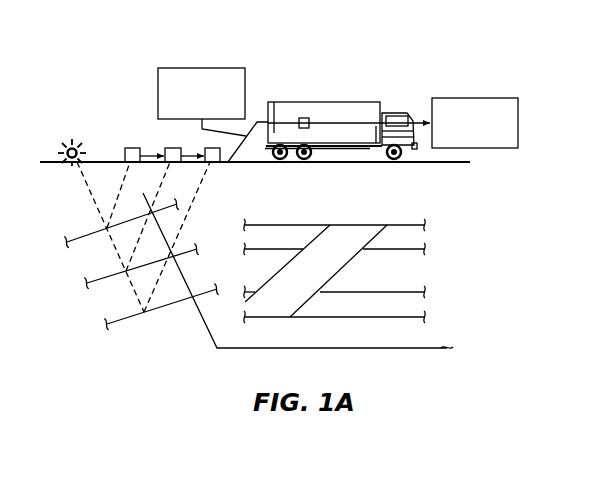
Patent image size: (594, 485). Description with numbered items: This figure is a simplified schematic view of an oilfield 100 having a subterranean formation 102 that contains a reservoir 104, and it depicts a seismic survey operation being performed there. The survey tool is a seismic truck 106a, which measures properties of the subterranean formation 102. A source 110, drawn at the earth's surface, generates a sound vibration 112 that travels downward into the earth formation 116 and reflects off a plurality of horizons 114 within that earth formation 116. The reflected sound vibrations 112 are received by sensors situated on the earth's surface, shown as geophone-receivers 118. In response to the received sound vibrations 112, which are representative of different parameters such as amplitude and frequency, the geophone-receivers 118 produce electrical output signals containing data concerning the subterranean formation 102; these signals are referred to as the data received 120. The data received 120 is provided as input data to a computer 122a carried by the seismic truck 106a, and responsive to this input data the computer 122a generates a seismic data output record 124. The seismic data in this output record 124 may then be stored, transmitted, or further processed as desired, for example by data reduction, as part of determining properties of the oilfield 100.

The oilfield 100 is at (466, 78).
The subterranean formation 102 is at (402, 218).
The reservoir 104 is at (406, 279).
The seismic truck 106a is at (374, 102).
The source 110 is at (68, 147).
The sound vibration 112 is at (118, 196).
The horizons 114 is at (72, 242).
The earth formation 116 is at (203, 324).
The geophone-receivers 118 is at (205, 148).
The data received 120 is at (186, 66).
The computer 122a is at (310, 117).
The seismic data output record 124 is at (486, 98).